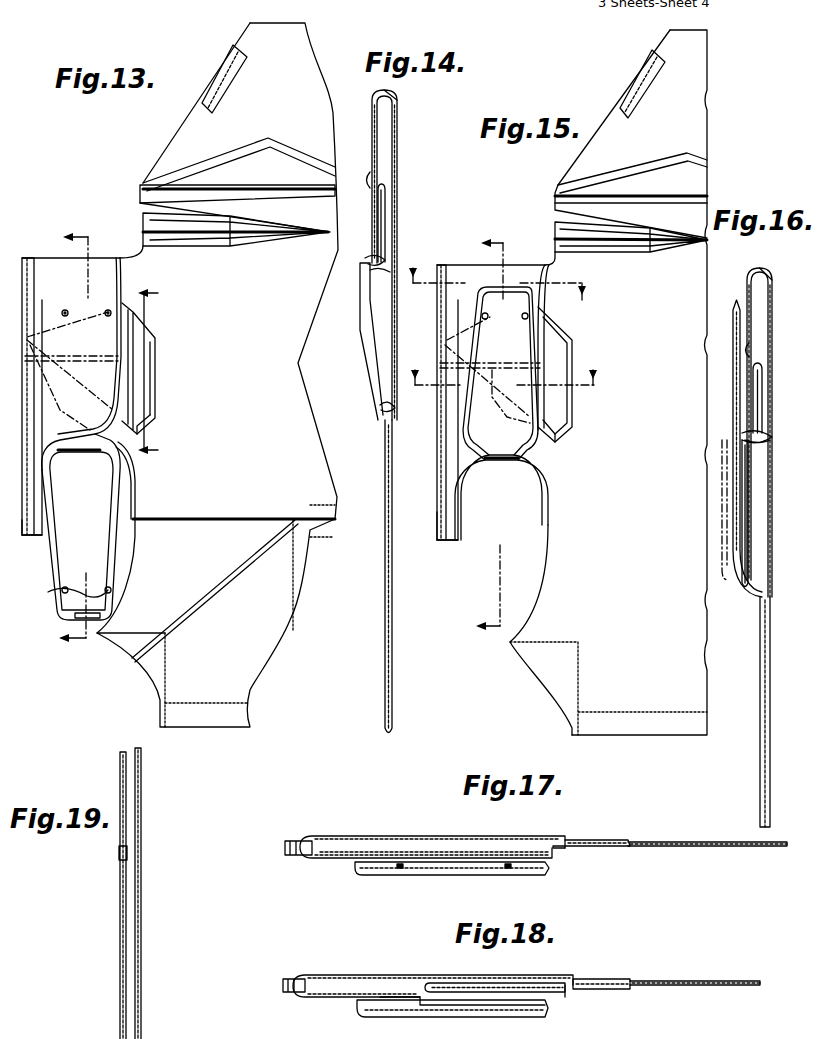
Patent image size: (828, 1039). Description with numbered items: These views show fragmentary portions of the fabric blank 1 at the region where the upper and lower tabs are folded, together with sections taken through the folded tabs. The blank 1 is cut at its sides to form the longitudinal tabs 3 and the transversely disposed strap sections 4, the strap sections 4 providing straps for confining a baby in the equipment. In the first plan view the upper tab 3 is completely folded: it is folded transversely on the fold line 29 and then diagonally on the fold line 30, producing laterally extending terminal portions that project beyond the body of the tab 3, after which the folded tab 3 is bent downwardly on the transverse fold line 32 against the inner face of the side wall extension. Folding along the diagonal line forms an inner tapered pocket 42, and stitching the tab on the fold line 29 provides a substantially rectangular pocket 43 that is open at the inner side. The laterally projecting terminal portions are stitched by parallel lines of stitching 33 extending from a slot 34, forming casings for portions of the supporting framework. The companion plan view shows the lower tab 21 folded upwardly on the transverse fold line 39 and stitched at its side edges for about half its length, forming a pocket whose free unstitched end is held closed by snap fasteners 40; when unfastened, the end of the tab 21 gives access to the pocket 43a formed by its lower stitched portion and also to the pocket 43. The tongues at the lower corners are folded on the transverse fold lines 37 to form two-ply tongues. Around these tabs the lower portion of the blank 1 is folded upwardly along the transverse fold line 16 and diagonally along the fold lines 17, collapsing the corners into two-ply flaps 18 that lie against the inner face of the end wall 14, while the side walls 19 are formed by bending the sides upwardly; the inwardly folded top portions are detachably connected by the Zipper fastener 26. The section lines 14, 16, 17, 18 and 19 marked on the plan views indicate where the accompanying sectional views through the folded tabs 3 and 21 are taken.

In FIG. 17, the blank 1 is at (684, 842).
In FIG. 18, the blank 1 is at (728, 981).
In FIG. 19, the blank 1 is at (142, 980).
In FIG. 19, the longitudinal tabs 3 is at (118, 924).
In FIG. 13, the strap sections 4 is at (211, 230).
In FIG. 15, the strap sections 4 is at (565, 232).
In FIG. 13, the end wall 14 is at (89, 445).
In FIG. 13, the transverse fold line 16 is at (248, 516).
In FIG. 15, the transverse fold line 16 is at (496, 437).
In FIG. 13, the diagonal fold lines 17 is at (228, 583).
In FIG. 15, the diagonal fold lines 17 is at (499, 273).
In FIG. 13, the two-ply flaps 18 is at (225, 634).
In FIG. 15, the two-ply flaps 18 is at (505, 367).
In FIG. 13, the side walls 19 is at (160, 375).
In FIG. 13, the longitudinal tabs 21 is at (83, 545).
In FIG. 14, the longitudinal tabs 21 is at (386, 612).
In FIG. 15, the longitudinal tabs 21 is at (513, 437).
In FIG. 16, the longitudinal tabs 21 is at (733, 422).
In FIG. 17, the longitudinal tabs 21 is at (388, 873).
In FIG. 18, the longitudinal tabs 21 is at (418, 1016).
In FIG. 13, the Zipper fastener 26 is at (23, 520).
In FIG. 15, the Zipper fastener 26 is at (437, 512).
In FIG. 17, the Zipper fastener 26 is at (285, 850).
In FIG. 18, the Zipper fastener 26 is at (283, 990).
In FIG. 13, the fold line 29 is at (50, 364).
In FIG. 14, the fold line 29 is at (367, 296).
In FIG. 16, the fold line 29 is at (766, 440).
In FIG. 13, the fold line 30 is at (55, 318).
In FIG. 15, the fold line 30 is at (457, 338).
In FIG. 13, the transverse fold lines 32 is at (46, 260).
In FIG. 14, the transverse fold lines 32 is at (398, 100).
In FIG. 15, the transverse fold lines 32 is at (477, 255).
In FIG. 16, the transverse fold lines 32 is at (778, 260).
In FIG. 13, the lines of stitching 33 is at (133, 363).
In FIG. 15, the lines of stitching 33 is at (572, 343).
In FIG. 17, the lines of stitching 33 is at (627, 840).
In FIG. 18, the lines of stitching 33 is at (626, 979).
In FIG. 13, the slot 34 is at (138, 428).
In FIG. 15, the slot 34 is at (567, 421).
In FIG. 13, the transverse fold lines 37 is at (27, 555).
In FIG. 15, the transverse fold lines 37 is at (444, 553).
In FIG. 13, the transverse fold lines 39 is at (88, 453).
In FIG. 15, the transverse fold lines 39 is at (502, 462).
In FIG. 16, the transverse fold lines 39 is at (760, 600).
In FIG. 13, the snap fasteners 40 is at (64, 591).
In FIG. 14, the snap fasteners 40 is at (369, 182).
In FIG. 15, the snap fasteners 40 is at (523, 316).
In FIG. 16, the snap fasteners 40 is at (744, 350).
In FIG. 17, the snap fasteners 40 is at (402, 870).
In FIG. 13, the inner tapered pocket 42 is at (107, 293).
In FIG. 14, the inner tapered pocket 42 is at (386, 222).
In FIG. 15, the inner tapered pocket 42 is at (460, 313).
In FIG. 16, the inner tapered pocket 42 is at (762, 396).
In FIG. 17, the inner tapered pocket 42 is at (478, 848).
In FIG. 18, the inner tapered pocket 42 is at (490, 995).
In FIG. 13, the rectangular pocket 43 is at (53, 306).
In FIG. 14, the rectangular pocket 43 is at (383, 167).
In FIG. 16, the rectangular pocket 43 is at (758, 333).
In FIG. 17, the rectangular pocket 43 is at (418, 827).
In FIG. 18, the rectangular pocket 43 is at (373, 985).
In FIG. 16, the pocket 43a is at (748, 467).
In FIG. 17, the pocket 43a is at (458, 872).
In FIG. 18, the pocket 43a is at (455, 1017).